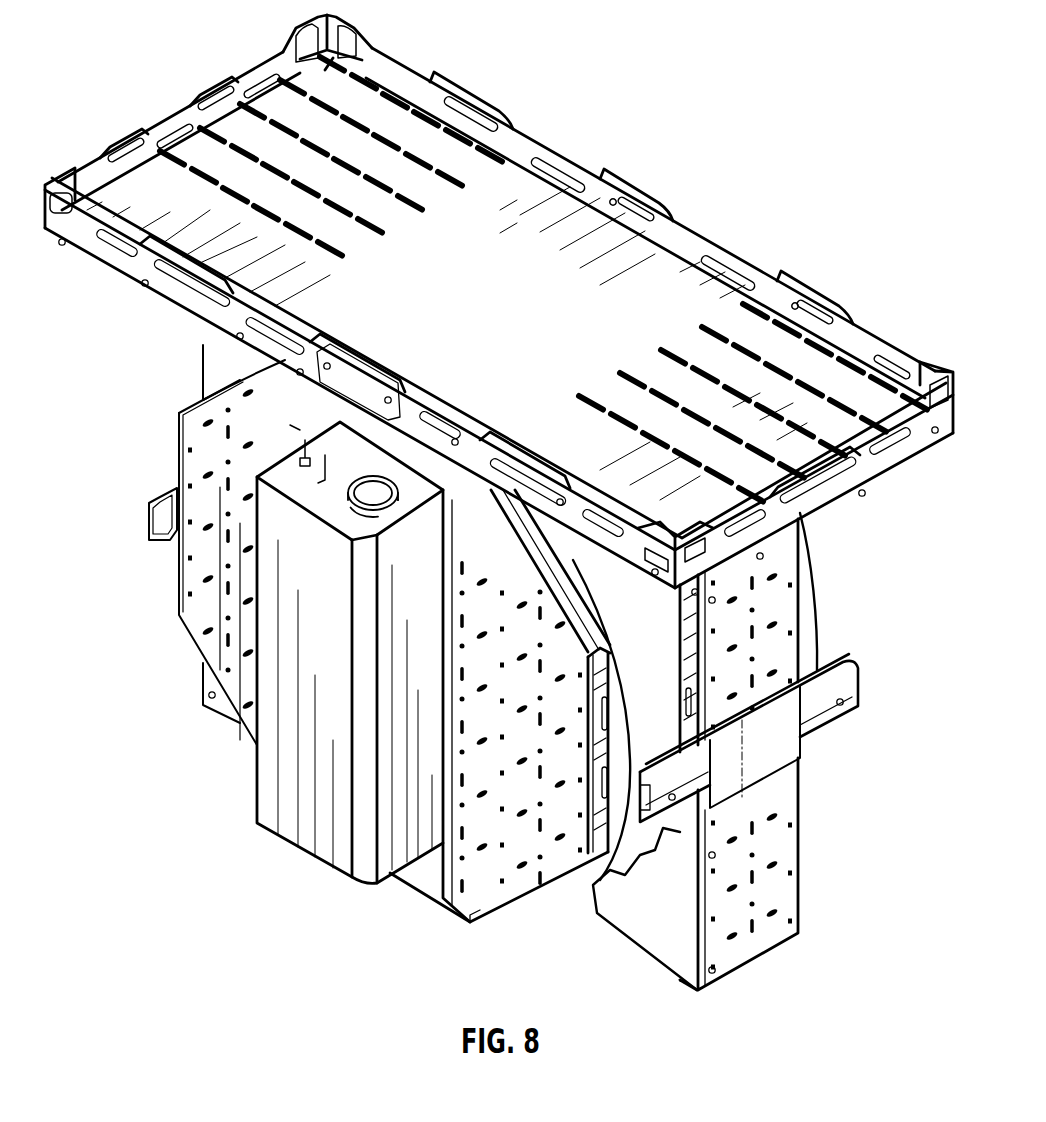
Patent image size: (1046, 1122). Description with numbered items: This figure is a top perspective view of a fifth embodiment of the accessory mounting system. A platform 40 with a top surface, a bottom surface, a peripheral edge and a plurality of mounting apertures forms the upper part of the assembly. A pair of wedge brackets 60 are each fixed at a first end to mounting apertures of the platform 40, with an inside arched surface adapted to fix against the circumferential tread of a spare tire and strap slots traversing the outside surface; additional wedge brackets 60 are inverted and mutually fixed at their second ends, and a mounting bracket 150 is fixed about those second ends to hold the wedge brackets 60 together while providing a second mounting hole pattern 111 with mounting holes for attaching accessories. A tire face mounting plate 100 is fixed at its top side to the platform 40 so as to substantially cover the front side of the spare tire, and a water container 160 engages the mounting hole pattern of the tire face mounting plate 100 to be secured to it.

The platform 40 is at (636, 252).
The wedge bracket 60 is at (778, 553).
The tire face mounting plate 100 is at (428, 888).
The second mounting hole pattern 111 is at (812, 718).
The mounting bracket 150 is at (757, 752).
The water container 160 is at (285, 778).